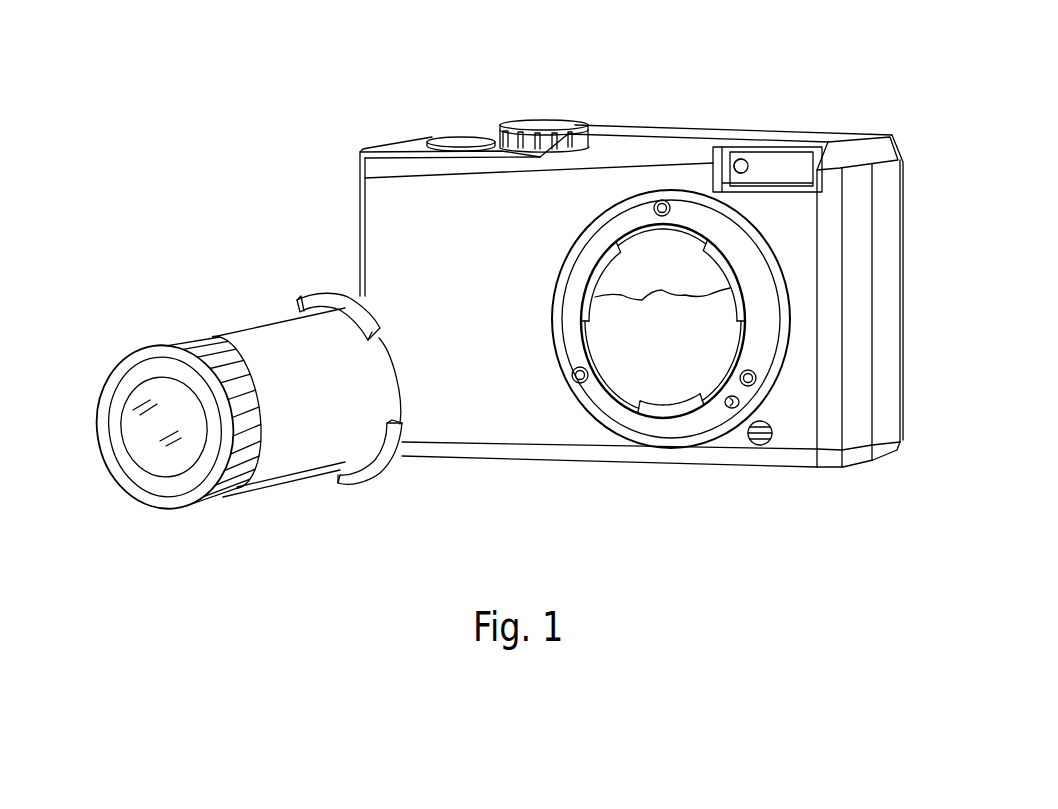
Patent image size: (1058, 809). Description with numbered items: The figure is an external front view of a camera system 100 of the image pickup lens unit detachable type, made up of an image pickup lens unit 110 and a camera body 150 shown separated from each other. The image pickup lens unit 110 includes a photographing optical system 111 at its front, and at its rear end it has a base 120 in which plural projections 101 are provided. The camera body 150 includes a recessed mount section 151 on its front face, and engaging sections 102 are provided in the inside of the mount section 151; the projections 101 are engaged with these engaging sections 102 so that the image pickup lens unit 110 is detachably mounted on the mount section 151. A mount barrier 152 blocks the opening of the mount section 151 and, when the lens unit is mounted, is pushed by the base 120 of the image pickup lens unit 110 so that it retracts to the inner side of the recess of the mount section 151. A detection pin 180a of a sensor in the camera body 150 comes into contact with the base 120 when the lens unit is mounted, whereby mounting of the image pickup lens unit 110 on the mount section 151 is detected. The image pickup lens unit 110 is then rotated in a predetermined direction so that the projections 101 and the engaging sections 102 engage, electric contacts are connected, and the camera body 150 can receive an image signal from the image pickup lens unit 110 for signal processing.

The camera system 100 is at (332, 100).
The image pickup lens unit 110 is at (243, 323).
The photographing optical system 111 is at (150, 392).
The projections 101 is at (335, 293).
The base 120 is at (402, 373).
The camera body 150 is at (678, 132).
The mount section 151 is at (765, 262).
The mount barrier 152 is at (622, 370).
The engaging sections 102 is at (682, 398).
The detection pin 180a is at (732, 410).